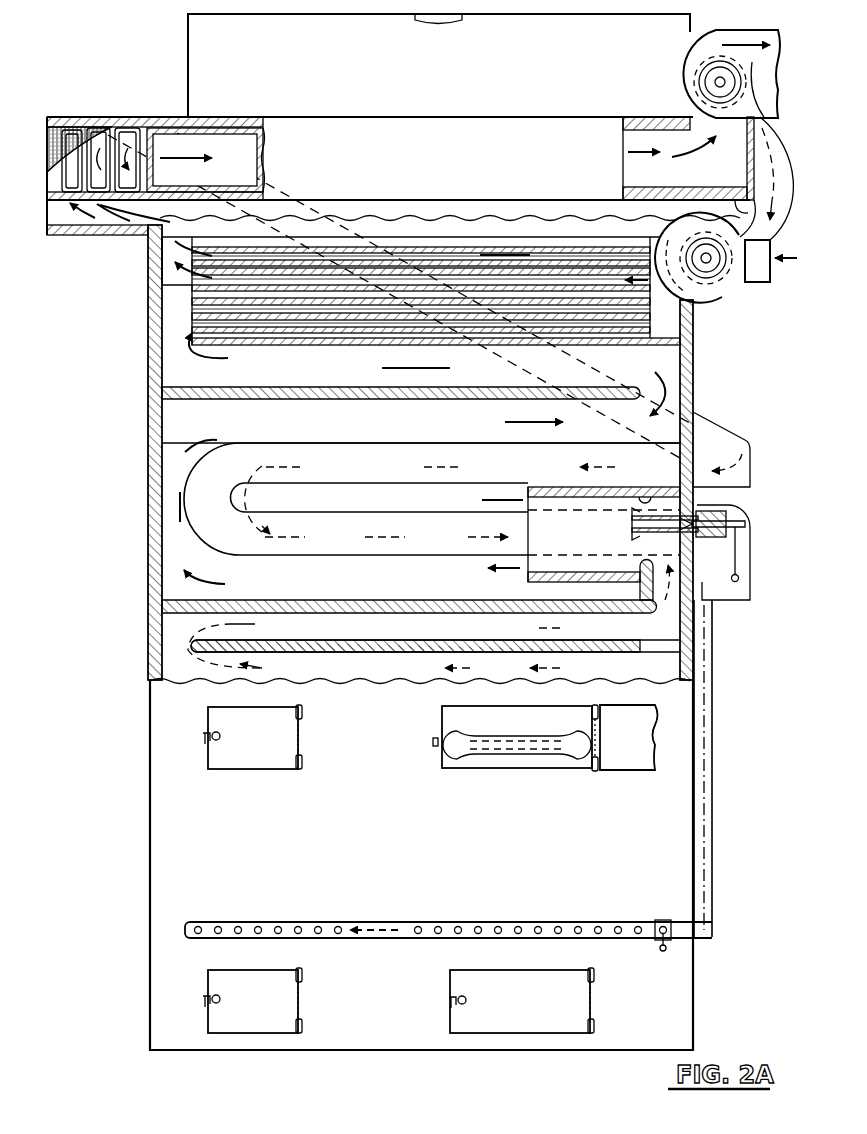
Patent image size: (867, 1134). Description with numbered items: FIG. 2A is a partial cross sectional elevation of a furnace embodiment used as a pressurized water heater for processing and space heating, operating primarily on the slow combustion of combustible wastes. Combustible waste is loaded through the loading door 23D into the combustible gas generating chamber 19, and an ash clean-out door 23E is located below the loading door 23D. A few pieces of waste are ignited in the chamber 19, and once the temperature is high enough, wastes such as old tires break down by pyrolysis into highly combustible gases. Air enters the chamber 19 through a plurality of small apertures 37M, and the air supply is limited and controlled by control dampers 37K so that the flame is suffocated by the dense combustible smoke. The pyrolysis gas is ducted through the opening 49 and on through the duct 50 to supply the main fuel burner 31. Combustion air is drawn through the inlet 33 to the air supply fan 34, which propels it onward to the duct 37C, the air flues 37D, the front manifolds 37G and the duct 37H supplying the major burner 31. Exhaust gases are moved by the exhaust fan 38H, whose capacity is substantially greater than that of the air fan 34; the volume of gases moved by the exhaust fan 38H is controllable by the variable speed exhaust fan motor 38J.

The combustible gas generating chamber 19 is at (460, 716).
The loading door 23D is at (646, 762).
The ash clean-out door 23E is at (452, 992).
The main fuel burner 31 is at (733, 513).
The inlet 33 is at (705, 290).
The air supply fan 34 is at (742, 281).
The duct 37C is at (702, 428).
The air flues 37D is at (392, 432).
The front manifolds 37G is at (340, 548).
The duct 37H is at (715, 664).
The control dampers 37K is at (666, 950).
The small apertures 37M is at (470, 902).
The exhaust fan 38H is at (745, 13).
The exhaust fan motor 38J is at (713, 80).
The opening 49 is at (195, 672).
The duct 50 is at (367, 612).